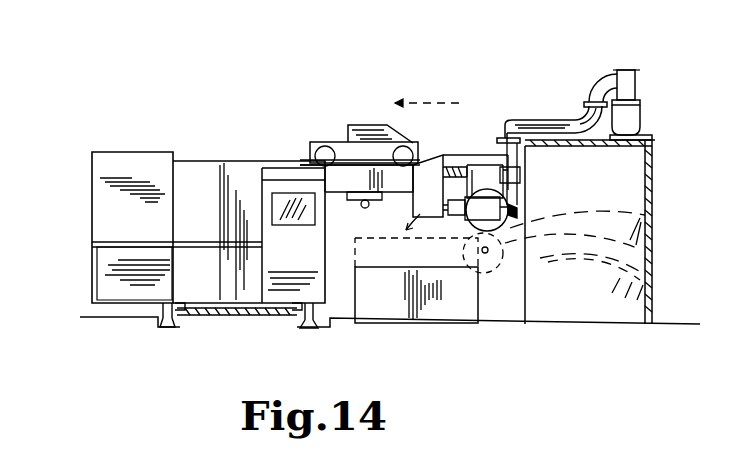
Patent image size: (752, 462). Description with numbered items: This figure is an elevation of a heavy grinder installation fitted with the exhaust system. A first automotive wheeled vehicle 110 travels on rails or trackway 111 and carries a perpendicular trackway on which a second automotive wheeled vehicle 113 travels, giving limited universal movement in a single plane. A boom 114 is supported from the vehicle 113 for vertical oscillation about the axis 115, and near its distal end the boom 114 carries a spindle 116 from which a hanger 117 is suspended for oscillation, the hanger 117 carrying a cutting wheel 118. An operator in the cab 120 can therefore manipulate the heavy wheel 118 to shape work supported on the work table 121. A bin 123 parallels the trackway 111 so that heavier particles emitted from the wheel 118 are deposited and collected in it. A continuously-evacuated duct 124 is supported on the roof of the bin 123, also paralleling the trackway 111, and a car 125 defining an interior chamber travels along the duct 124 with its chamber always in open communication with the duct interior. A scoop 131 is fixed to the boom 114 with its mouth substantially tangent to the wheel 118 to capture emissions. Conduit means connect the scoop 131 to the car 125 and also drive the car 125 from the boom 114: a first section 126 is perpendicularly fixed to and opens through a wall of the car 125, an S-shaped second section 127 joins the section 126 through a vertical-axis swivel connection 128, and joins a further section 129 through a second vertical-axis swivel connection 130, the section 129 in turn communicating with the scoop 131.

The first automotive wheeled vehicle 110 is at (107, 222).
The trackway 111 is at (302, 327).
The second automotive wheeled vehicle 113 is at (365, 128).
The boom 114 is at (427, 200).
The axis 115 is at (363, 208).
The spindle 116 is at (457, 167).
The hanger 117 is at (482, 170).
The cutting wheel 118 is at (485, 223).
The cab 120 is at (306, 265).
The work table 121 is at (450, 308).
The bin 123 is at (652, 245).
The continuously-evacuated duct 124 is at (632, 117).
The car 125 is at (627, 83).
The first section 126 is at (614, 74).
The second section 127 is at (548, 120).
The swivel connection 128 is at (589, 86).
The further section 129 is at (513, 152).
The swivel connection 130 is at (510, 118).
The scoop 131 is at (517, 212).